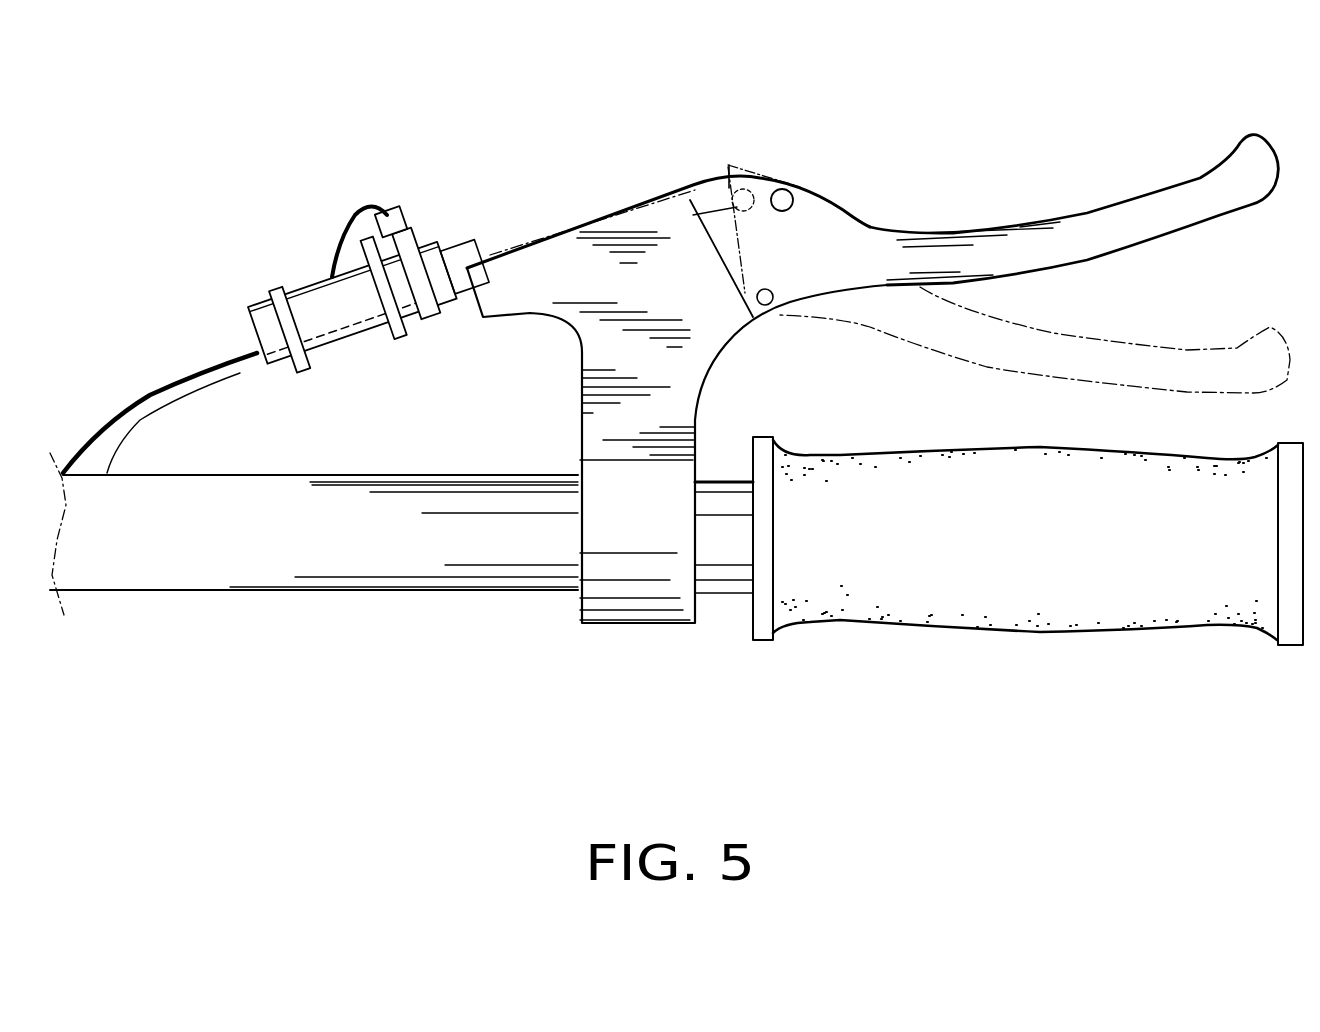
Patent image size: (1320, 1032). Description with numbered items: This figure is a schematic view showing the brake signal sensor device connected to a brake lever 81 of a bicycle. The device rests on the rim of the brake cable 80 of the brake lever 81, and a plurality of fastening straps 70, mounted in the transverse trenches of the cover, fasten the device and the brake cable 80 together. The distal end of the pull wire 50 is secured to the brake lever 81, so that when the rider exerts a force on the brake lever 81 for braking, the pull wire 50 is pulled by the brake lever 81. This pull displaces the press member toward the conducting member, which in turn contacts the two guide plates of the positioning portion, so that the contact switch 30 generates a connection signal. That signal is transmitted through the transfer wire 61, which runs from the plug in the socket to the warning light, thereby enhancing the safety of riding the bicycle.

The contact switch 30 is at (403, 183).
The pull wire 50 is at (486, 250).
The transfer wire 61 is at (355, 213).
The fastening straps 70 is at (285, 297).
The brake cable 80 is at (233, 377).
The brake lever 81 is at (943, 247).